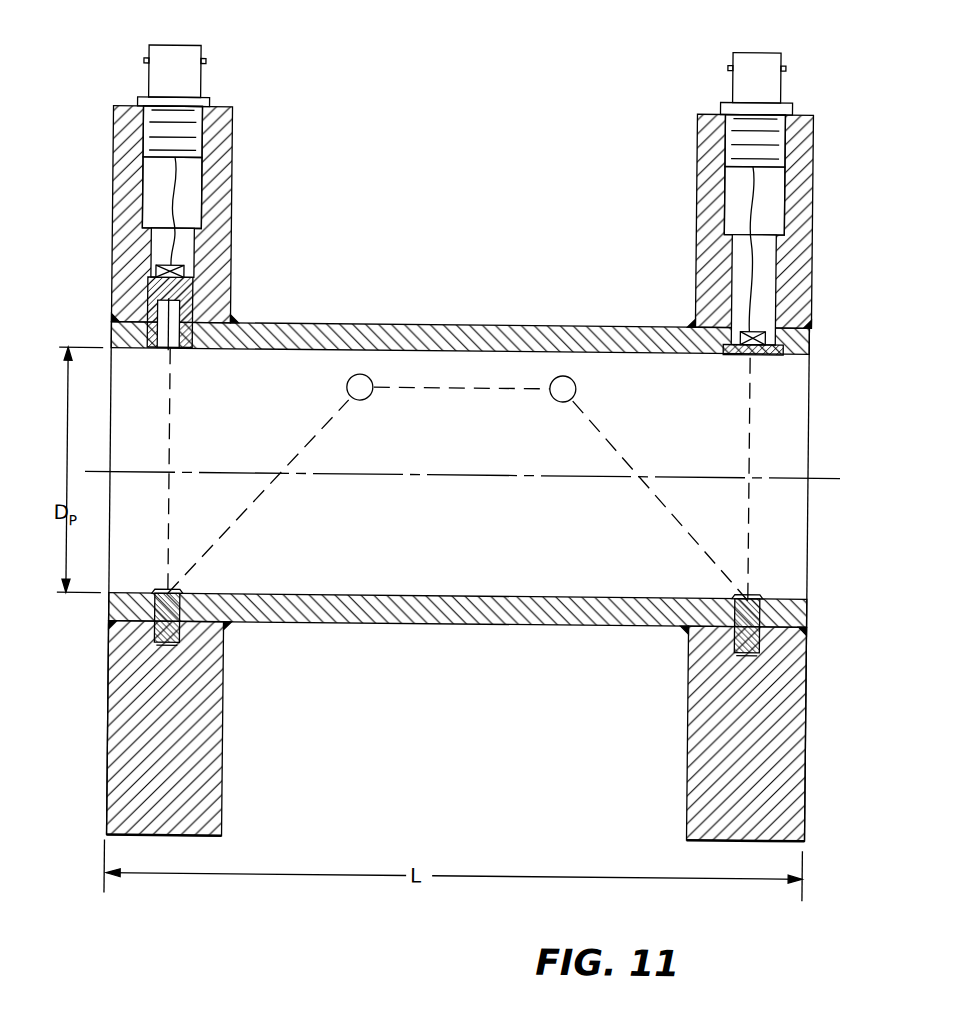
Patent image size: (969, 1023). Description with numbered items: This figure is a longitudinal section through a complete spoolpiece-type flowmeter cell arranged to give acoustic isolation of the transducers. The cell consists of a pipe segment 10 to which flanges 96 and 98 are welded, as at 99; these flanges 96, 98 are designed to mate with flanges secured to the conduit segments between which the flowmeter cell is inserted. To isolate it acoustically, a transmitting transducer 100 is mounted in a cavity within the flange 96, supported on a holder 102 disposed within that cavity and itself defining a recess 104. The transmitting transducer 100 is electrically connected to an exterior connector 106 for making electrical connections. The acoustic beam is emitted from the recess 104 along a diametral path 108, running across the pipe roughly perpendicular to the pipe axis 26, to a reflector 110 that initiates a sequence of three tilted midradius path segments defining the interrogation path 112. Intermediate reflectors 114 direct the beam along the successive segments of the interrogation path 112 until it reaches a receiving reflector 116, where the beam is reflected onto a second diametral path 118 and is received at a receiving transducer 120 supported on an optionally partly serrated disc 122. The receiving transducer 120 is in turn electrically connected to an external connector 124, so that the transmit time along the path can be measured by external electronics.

The pipe segment 10 is at (468, 325).
The pipe axis 26 is at (485, 478).
The flange 96 is at (224, 754).
The flange 98 is at (691, 798).
The weld 99 is at (235, 319).
The transmitting transducer 100 is at (182, 266).
The holder 102 is at (188, 294).
The recess 104 is at (116, 325).
The exterior connector 106 is at (200, 55).
The diametral path 108 is at (169, 422).
The reflector 110 is at (179, 602).
The interrogation path 112 is at (234, 525).
The intermediate reflectors 114 is at (352, 400).
The receiving reflector 116 is at (734, 608).
The diametral path 118 is at (747, 521).
The receiving transducer 120 is at (775, 307).
The partly serrated disc 122 is at (774, 355).
The external connector 124 is at (780, 61).